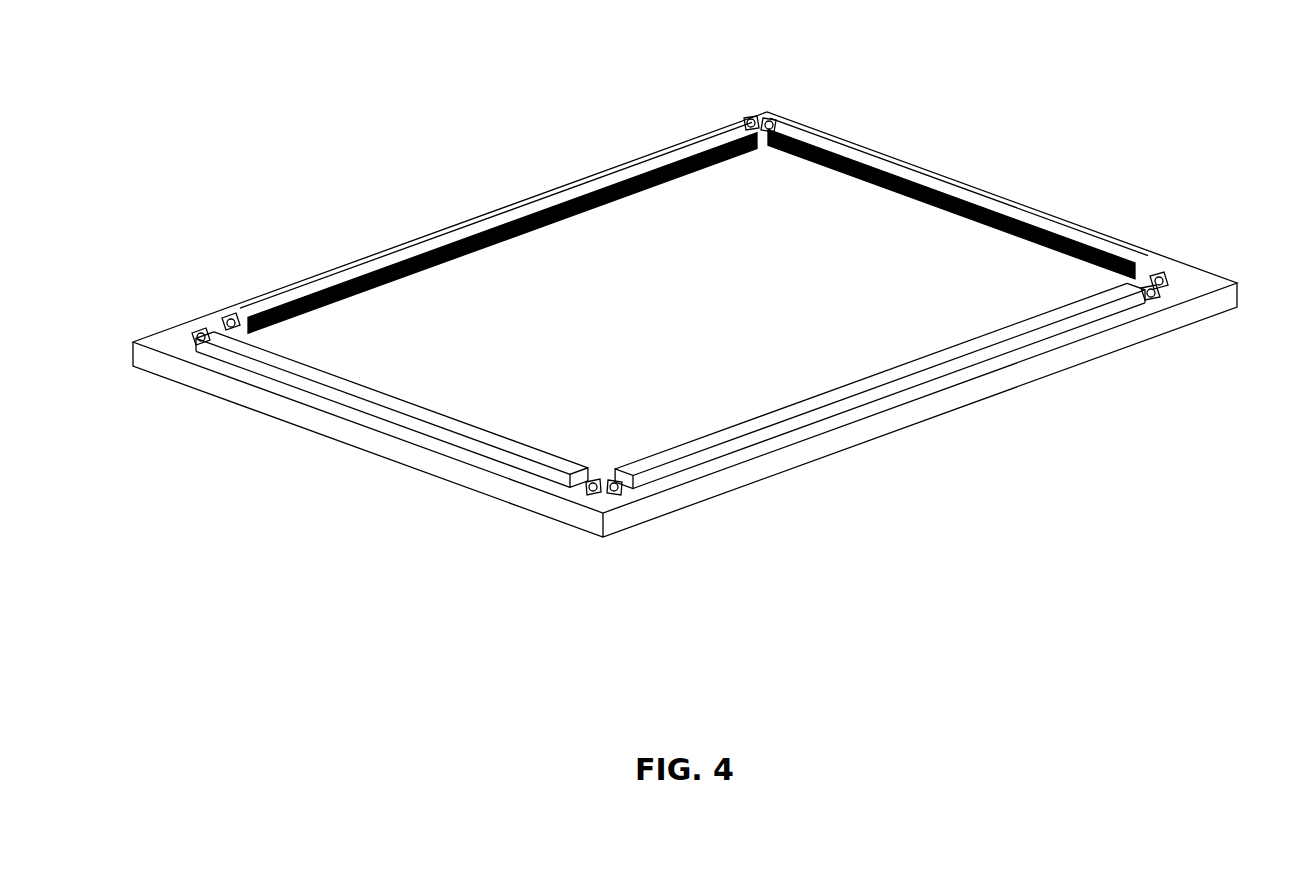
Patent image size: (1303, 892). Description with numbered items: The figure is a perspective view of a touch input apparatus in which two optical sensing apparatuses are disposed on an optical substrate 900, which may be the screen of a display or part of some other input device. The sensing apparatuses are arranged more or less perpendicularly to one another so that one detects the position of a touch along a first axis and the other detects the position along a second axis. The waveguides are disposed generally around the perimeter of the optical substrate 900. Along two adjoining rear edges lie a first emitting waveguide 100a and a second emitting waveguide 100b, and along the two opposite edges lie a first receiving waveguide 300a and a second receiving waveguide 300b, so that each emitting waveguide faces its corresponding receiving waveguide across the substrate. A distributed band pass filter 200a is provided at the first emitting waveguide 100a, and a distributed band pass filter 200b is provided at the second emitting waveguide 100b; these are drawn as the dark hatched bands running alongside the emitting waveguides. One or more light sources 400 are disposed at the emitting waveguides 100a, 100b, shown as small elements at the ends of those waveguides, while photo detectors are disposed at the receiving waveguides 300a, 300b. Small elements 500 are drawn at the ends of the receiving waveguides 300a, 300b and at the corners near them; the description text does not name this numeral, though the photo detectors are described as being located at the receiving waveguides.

The optical substrate 900 is at (708, 316).
The first emitting waveguide 100a is at (410, 245).
The second emitting waveguide 100b is at (1134, 250).
The distributed band pass filter 200a is at (445, 262).
The distributed band pass filter 200b is at (1008, 233).
The first receiving waveguide 300a is at (797, 412).
The second receiving waveguide 300b is at (551, 463).
The light source 400 is at (768, 120).
The end connector 500 is at (197, 341).